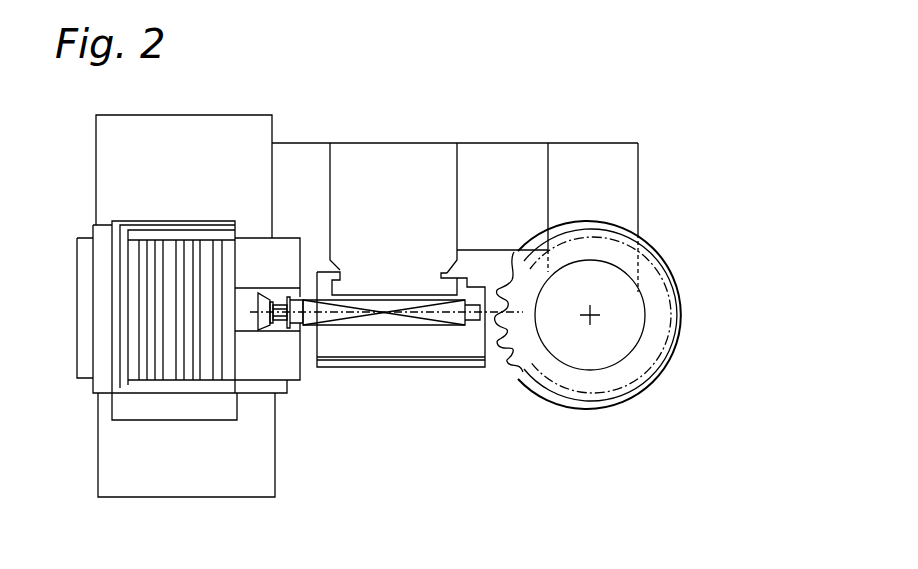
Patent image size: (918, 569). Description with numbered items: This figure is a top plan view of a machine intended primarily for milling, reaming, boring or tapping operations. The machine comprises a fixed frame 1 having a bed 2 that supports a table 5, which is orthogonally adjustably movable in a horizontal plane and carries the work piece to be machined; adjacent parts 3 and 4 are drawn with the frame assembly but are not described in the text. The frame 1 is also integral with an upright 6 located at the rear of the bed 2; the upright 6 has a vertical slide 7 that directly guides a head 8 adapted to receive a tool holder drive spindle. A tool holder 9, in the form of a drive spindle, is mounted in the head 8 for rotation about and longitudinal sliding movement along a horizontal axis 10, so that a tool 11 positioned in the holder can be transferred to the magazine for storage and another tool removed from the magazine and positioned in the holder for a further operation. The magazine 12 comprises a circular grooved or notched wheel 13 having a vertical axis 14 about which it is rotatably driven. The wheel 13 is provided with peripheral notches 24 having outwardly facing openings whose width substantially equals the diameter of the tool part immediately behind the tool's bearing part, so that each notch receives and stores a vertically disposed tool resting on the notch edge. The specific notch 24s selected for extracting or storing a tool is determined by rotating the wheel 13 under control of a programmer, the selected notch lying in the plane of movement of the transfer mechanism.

The fixed frame 1 is at (455, 206).
The bed 2 is at (184, 176).
The bearing block 3 is at (245, 255).
The end cap 4 is at (102, 242).
The table 5 is at (152, 258).
The upright 6 is at (511, 217).
The vertical slide 7 is at (383, 296).
The head 8 is at (371, 345).
The tool holder 9 is at (293, 312).
The horizontal axis 10 is at (470, 317).
The tool 11 is at (274, 302).
The magazine 12 is at (653, 240).
The notched wheel 13 is at (586, 384).
The vertical axis 14 is at (590, 312).
The peripheral notches 24 is at (513, 355).
The selected notch 24s is at (493, 302).